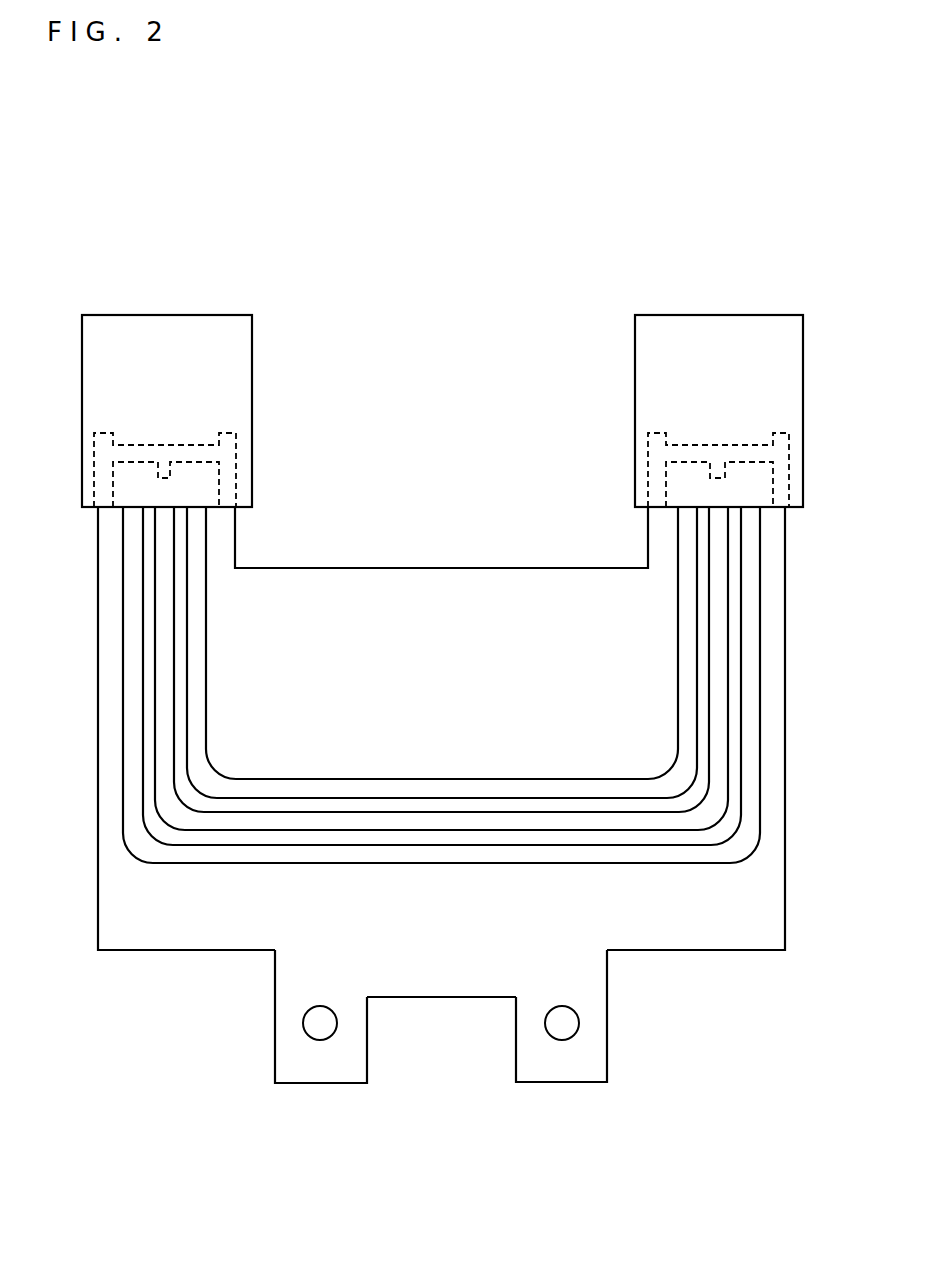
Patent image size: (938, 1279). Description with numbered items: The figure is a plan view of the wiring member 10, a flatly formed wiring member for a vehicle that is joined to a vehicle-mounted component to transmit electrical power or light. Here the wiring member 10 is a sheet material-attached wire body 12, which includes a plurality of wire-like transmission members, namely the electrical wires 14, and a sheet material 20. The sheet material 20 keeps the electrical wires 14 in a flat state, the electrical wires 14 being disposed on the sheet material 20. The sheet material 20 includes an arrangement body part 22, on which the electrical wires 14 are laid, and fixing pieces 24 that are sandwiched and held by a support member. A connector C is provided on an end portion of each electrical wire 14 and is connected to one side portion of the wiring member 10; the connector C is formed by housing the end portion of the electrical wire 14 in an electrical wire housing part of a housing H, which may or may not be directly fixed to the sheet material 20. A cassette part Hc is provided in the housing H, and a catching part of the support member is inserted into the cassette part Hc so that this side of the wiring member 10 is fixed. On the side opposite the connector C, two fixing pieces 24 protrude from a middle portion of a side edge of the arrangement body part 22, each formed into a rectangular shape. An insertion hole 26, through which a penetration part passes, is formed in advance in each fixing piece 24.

The wiring member 10 is at (445, 616).
The sheet material-attached wire body 12 is at (276, 158).
The electrical wire 14 is at (193, 568).
The sheet material 20 is at (440, 583).
The arrangement body part 22 is at (108, 808).
The fixing piece 24 is at (320, 1072).
The insertion hole 26 is at (312, 1037).
The connector C is at (238, 373).
The housing H is at (252, 412).
The cassette part Hc is at (146, 444).